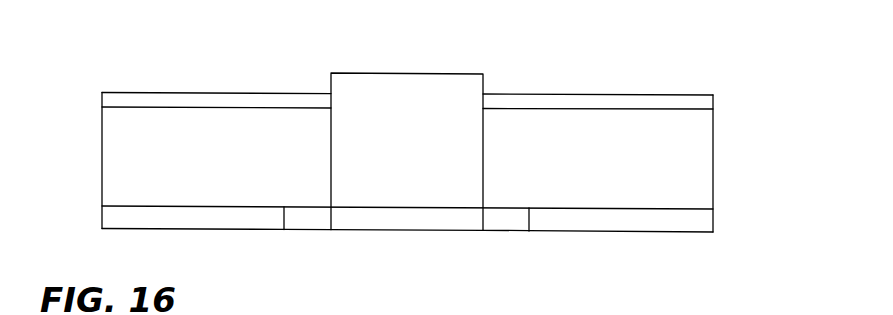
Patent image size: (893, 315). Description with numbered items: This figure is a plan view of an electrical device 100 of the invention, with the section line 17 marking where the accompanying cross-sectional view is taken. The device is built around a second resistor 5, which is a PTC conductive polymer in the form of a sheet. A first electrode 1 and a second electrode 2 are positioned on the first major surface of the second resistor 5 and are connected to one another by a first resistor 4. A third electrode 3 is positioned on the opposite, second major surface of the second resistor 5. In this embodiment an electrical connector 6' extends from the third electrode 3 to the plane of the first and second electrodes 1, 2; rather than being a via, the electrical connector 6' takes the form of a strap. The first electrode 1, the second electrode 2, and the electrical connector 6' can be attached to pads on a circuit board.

The electrical device 100 is at (443, 152).
The first electrode 1 is at (184, 217).
The second electrode 2 is at (613, 222).
The third electrode 3 is at (190, 105).
The first resistor 4 is at (299, 222).
The second resistor 5 is at (698, 160).
The electrical connector 6' is at (425, 118).
The line 17— 17 is at (102, 93).